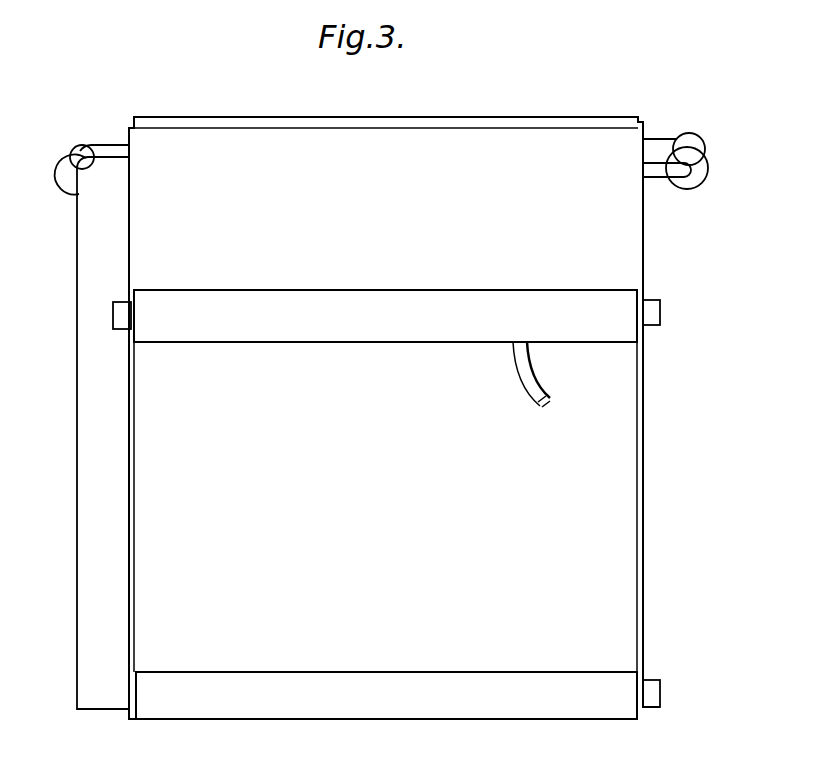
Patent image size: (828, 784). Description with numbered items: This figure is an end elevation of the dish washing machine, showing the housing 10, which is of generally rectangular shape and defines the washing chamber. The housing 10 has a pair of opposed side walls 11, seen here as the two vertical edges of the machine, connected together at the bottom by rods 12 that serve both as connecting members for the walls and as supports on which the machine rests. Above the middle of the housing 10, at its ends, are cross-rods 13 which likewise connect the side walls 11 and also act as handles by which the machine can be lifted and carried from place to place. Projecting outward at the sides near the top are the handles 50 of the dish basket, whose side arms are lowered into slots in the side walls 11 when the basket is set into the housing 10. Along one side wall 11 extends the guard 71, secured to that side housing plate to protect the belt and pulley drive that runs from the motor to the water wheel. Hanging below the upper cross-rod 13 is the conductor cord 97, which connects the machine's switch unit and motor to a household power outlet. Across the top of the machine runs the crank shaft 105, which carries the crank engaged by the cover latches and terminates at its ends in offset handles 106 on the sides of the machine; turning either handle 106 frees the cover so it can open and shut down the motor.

The housing 10 is at (645, 376).
The side walls 11 is at (130, 514).
The rods 12 is at (317, 681).
The cross-rods 13 is at (300, 298).
The handles 50 is at (80, 144).
The guard 71 is at (83, 414).
The conductor cord 97 is at (527, 391).
The crank shaft 105 is at (656, 173).
The offset handles 106 is at (70, 176).